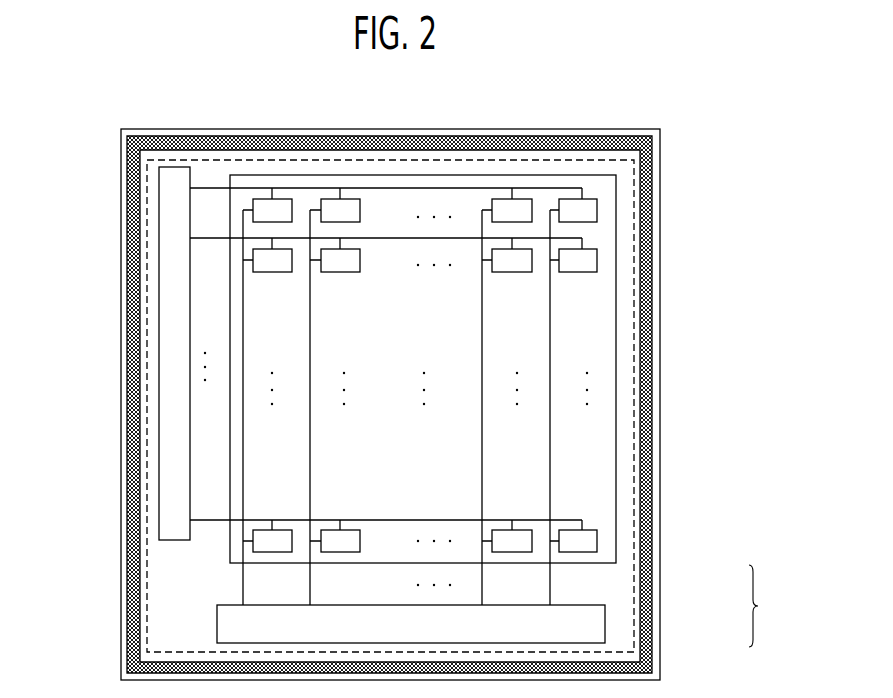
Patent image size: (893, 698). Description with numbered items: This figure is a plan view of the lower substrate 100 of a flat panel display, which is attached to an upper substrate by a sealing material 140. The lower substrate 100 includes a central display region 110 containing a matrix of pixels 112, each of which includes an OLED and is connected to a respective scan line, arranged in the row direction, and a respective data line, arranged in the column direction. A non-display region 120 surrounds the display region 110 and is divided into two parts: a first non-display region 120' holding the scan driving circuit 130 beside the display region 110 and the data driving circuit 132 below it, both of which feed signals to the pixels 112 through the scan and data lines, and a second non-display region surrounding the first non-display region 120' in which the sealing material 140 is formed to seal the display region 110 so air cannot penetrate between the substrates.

The lower substrate 100 is at (536, 117).
The display region 110 is at (593, 174).
The pixel 112 is at (597, 209).
The non-display region 120 is at (768, 606).
The first non-display region 120' is at (445, 406).
The scan driving circuit 130 is at (180, 381).
The data driving circuit 132 is at (217, 623).
The sealing material 140 is at (130, 200).